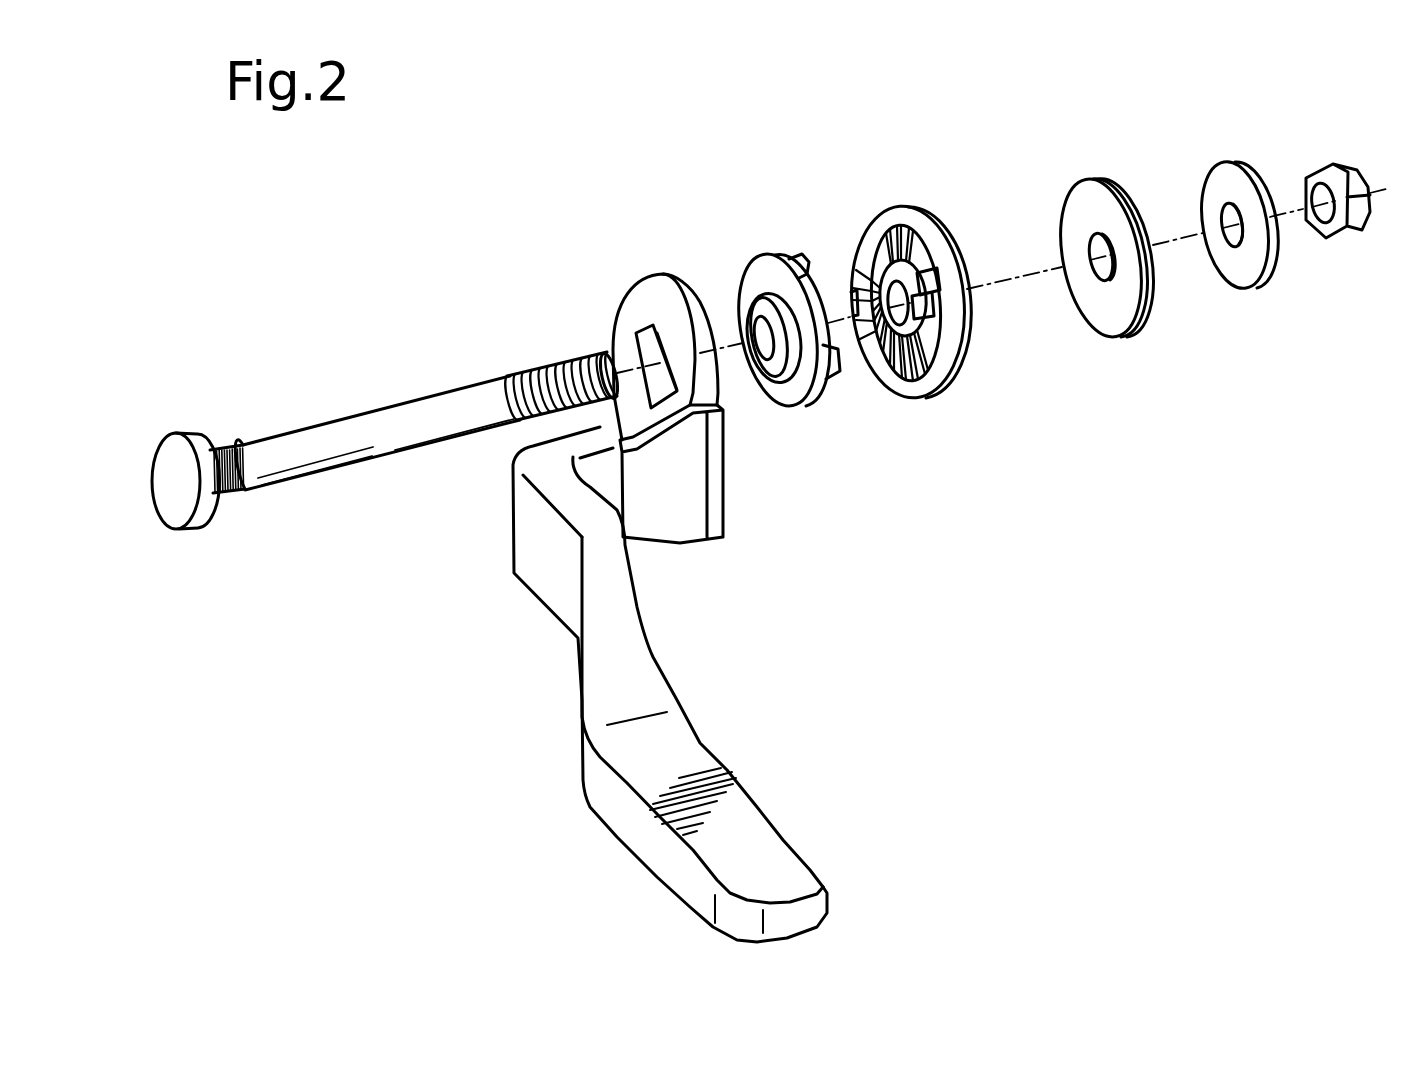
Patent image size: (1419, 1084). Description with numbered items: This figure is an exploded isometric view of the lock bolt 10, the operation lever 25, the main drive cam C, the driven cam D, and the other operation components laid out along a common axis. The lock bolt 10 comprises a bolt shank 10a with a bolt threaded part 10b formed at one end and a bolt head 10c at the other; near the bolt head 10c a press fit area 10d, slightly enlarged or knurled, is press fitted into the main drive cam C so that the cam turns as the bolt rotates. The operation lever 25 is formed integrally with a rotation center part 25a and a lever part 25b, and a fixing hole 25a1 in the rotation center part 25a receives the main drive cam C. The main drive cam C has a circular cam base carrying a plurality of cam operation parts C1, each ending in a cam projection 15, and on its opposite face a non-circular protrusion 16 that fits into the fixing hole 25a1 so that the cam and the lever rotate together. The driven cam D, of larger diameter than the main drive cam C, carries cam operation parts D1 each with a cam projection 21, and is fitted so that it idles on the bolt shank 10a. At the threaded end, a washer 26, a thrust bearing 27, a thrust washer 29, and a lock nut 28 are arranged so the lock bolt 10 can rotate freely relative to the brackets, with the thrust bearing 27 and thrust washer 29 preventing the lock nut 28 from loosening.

The lock bolt 10 is at (427, 388).
The bolt shank 10a is at (425, 434).
The bolt threaded part 10b is at (558, 362).
The bolt head 10c is at (178, 433).
The press fit area 10d is at (223, 447).
The cam projection 15 is at (766, 250).
The protrusion 16 is at (797, 382).
The main drive cam C is at (745, 253).
The cam operation part C1 is at (801, 252).
The driven cam D is at (905, 200).
The cam operation part D1 is at (857, 214).
The cam projection 21 is at (942, 291).
The operation lever 25 is at (670, 653).
The rotation center part 25a is at (665, 276).
The fixing hole 25a1 is at (643, 347).
The lever part 25b is at (578, 788).
The washer 26 is at (1088, 178).
The thrust bearing 27 is at (1150, 285).
The lock nut 28 is at (1324, 166).
The thrust washer 29 is at (1270, 262).